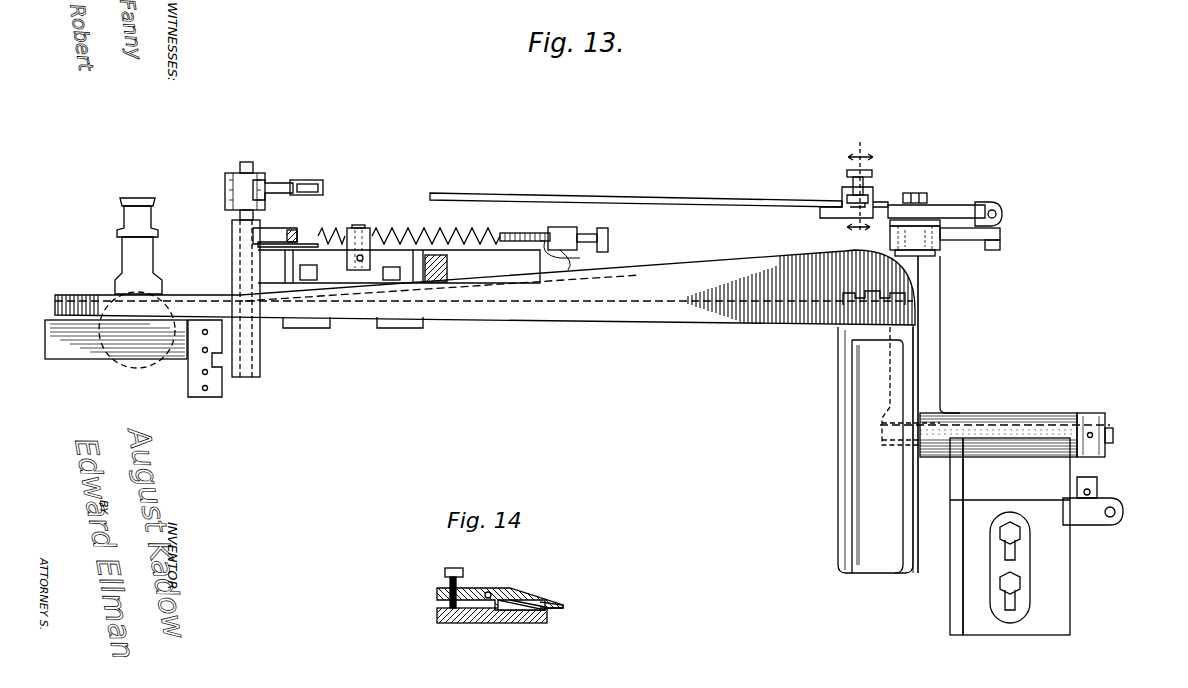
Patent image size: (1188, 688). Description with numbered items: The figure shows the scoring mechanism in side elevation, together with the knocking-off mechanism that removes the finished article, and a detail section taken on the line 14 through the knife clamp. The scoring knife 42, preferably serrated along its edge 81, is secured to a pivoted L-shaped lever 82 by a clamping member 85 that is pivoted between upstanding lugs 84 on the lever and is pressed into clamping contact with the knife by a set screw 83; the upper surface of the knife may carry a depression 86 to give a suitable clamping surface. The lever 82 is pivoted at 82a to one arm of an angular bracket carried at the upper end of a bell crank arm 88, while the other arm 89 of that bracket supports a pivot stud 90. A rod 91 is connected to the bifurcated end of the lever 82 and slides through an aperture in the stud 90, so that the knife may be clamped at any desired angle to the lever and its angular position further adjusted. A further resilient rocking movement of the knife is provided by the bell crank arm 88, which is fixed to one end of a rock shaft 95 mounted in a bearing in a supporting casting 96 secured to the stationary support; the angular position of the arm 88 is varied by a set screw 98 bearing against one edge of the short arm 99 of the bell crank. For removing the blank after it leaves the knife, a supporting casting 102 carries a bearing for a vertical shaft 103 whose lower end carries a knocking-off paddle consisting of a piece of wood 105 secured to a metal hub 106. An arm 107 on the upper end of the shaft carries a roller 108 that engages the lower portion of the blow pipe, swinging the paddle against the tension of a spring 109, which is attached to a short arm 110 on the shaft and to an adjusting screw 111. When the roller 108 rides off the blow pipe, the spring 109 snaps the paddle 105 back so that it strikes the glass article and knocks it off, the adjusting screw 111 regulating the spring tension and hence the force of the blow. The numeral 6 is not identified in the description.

In FIG. 13, the adjusting nut 6 is at (608, 240).
In FIG. 13, the section line 14 is at (860, 191).
In FIG. 13, the scoring knife 42 is at (665, 192).
In FIG. 14, the scoring knife 42 is at (560, 605).
In FIG. 13, the edge of scoring knife 81 is at (1070, 585).
In FIG. 13, the pivoted L-shaped lever 82 is at (956, 206).
In FIG. 13, the pivot of lever 82a is at (922, 194).
In FIG. 13, the set screw 83 is at (867, 173).
In FIG. 14, the set screw 83 is at (456, 577).
In FIG. 13, the upstanding lugs 84 is at (852, 212).
In FIG. 14, the upstanding lugs 84 is at (520, 623).
In FIG. 13, the clamping member 85 is at (868, 191).
In FIG. 14, the clamping member 85 is at (500, 592).
In FIG. 14, the depression 86 is at (535, 600).
In FIG. 13, the bell crank arm 88 is at (940, 306).
In FIG. 13, the arm of angular bracket 89 is at (968, 240).
In FIG. 13, the pivot stud 90 is at (998, 250).
In FIG. 13, the rod 91 is at (1002, 212).
In FIG. 13, the rock shaft 95 is at (1022, 412).
In FIG. 13, the supporting casting 96 is at (978, 535).
In FIG. 13, the set screw 98 is at (1094, 492).
In FIG. 13, the short arm of bell crank 99 is at (1092, 470).
In FIG. 13, the supporting casting 102 is at (333, 272).
In FIG. 13, the vertical shaft 103 is at (246, 162).
In FIG. 13, the piece of wood 105 is at (150, 348).
In FIG. 13, the metal hub 106 is at (226, 372).
In FIG. 13, the arm 107 is at (286, 182).
In FIG. 13, the roller 108 is at (325, 186).
In FIG. 13, the spring 109 is at (410, 228).
In FIG. 13, the short arm 110 is at (280, 232).
In FIG. 13, the adjusting screw 111 is at (535, 233).